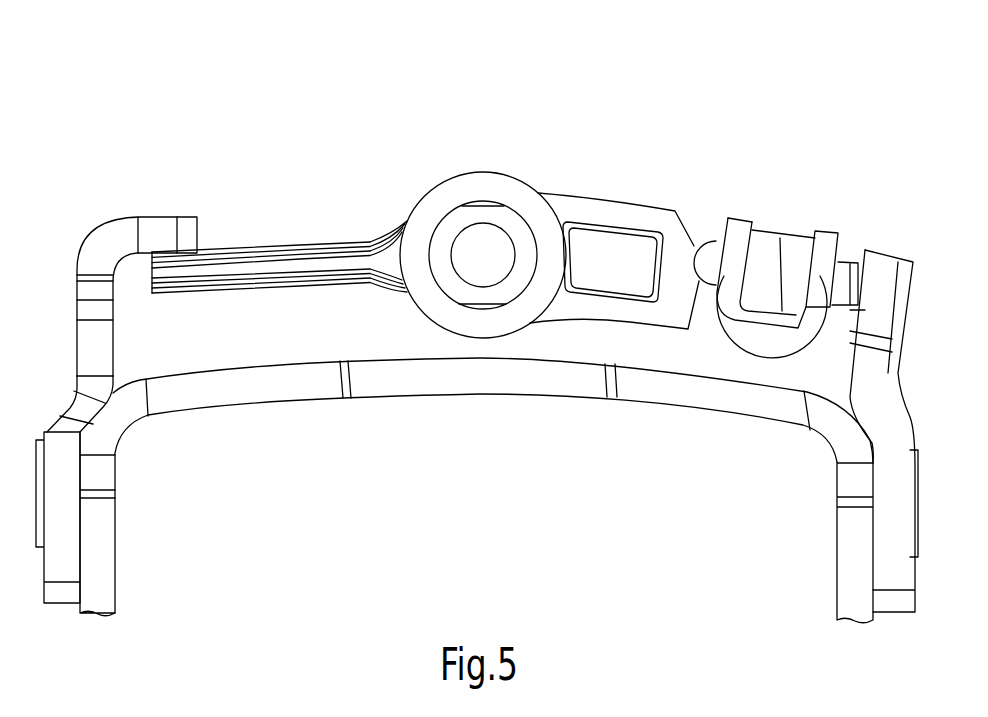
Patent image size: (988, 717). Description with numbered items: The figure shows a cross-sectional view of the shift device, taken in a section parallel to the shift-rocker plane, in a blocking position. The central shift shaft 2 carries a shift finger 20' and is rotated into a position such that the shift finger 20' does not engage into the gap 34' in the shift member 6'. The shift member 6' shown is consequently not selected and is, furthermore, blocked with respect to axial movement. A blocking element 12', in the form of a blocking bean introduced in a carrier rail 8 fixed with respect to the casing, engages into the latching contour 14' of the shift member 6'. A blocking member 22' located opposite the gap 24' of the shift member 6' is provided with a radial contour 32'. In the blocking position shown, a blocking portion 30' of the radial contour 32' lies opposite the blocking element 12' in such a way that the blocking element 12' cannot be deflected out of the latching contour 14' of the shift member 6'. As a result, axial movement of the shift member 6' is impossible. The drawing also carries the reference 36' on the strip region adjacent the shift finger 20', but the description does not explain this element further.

The shift shaft 2 is at (510, 283).
The shift member 6' is at (493, 490).
The carrier rail 8 is at (740, 230).
The blocking element 12' is at (721, 197).
The latching contour 14' is at (884, 370).
The shift finger 20' is at (213, 202).
The blocking member 22' is at (618, 195).
The gap 24' is at (119, 524).
The blocking portion 30' is at (615, 409).
The radial contour 32' is at (625, 134).
The gap 34' is at (122, 266).
The strip fan section 36' is at (360, 209).